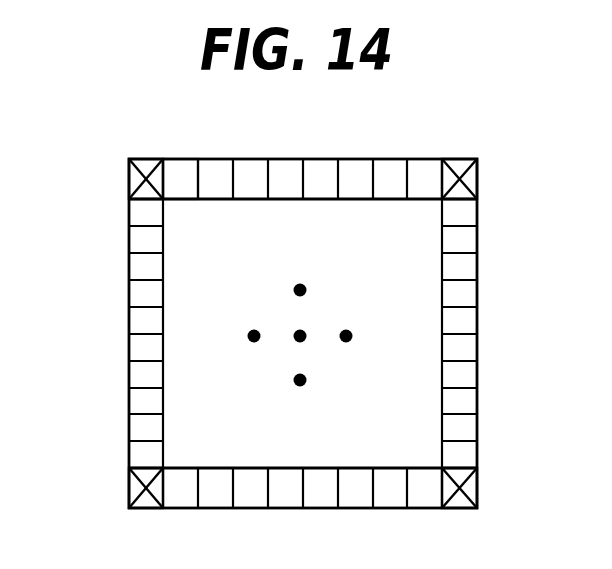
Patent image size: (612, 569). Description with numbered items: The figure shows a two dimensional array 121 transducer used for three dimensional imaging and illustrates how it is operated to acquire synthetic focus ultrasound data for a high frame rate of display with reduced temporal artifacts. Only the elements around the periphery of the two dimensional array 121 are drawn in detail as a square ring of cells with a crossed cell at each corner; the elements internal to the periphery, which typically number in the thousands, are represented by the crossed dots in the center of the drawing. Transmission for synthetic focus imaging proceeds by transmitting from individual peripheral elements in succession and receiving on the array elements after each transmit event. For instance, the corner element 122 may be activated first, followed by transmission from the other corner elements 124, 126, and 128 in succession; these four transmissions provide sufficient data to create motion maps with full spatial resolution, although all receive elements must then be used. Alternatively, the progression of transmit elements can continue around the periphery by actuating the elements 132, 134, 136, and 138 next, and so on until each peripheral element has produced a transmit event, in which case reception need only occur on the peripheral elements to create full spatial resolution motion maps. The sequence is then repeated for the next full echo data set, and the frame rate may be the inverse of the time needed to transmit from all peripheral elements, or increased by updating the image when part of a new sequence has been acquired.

The 2D array 121 is at (333, 158).
The corner element 122 is at (147, 158).
The corner element 124 is at (480, 183).
The corner element 126 is at (478, 492).
The corner element 128 is at (135, 509).
The peripheral element 132 is at (183, 158).
The peripheral element 134 is at (480, 217).
The peripheral element 136 is at (422, 509).
The peripheral element 138 is at (128, 453).